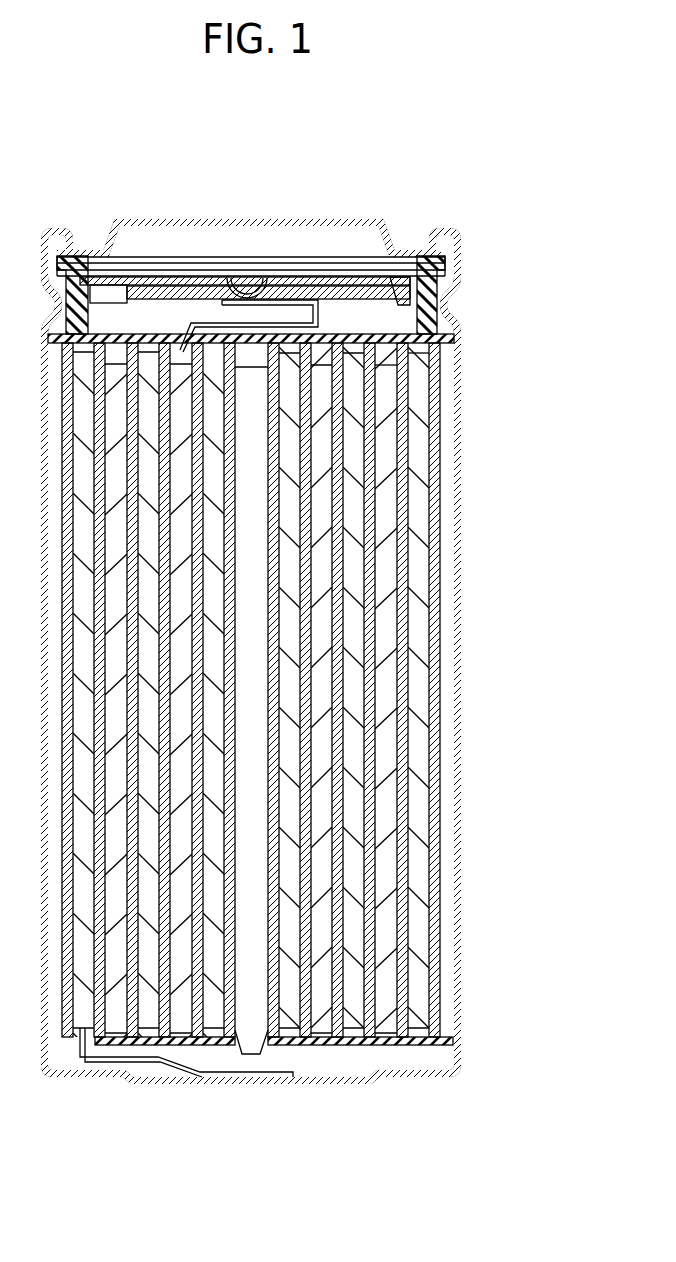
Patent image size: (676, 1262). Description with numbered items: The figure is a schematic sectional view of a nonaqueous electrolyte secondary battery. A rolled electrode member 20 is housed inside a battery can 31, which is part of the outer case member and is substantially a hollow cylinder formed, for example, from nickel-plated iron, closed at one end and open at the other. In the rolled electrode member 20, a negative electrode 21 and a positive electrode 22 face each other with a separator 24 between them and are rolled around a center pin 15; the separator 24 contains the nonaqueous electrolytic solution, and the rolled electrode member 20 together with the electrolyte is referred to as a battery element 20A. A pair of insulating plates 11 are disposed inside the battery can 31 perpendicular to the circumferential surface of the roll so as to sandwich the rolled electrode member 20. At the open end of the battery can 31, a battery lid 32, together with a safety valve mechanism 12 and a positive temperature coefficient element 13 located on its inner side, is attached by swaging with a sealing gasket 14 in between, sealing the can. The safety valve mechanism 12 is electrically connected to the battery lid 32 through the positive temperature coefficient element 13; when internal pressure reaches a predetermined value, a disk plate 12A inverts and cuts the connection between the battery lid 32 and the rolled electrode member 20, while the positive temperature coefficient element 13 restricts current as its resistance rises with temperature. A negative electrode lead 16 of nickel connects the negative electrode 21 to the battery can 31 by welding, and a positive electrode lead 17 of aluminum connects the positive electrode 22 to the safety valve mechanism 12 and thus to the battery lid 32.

The insulating plate 11 is at (450, 341).
The safety valve mechanism 12 is at (349, 274).
The disk plate 12A is at (311, 277).
The positive temperature coefficient element 13 is at (443, 260).
The sealing gasket 14 is at (425, 303).
The center pin 15 is at (260, 703).
The negative electrode lead 16 is at (160, 1063).
The positive electrode lead 17 is at (228, 303).
The rolled electrode member 20 is at (307, 698).
The battery element 20A is at (443, 438).
The negative electrode 21 is at (418, 595).
The positive electrode 22 is at (385, 558).
The separator 24 is at (405, 657).
The battery can 31 is at (462, 385).
The battery lid 32 is at (225, 221).